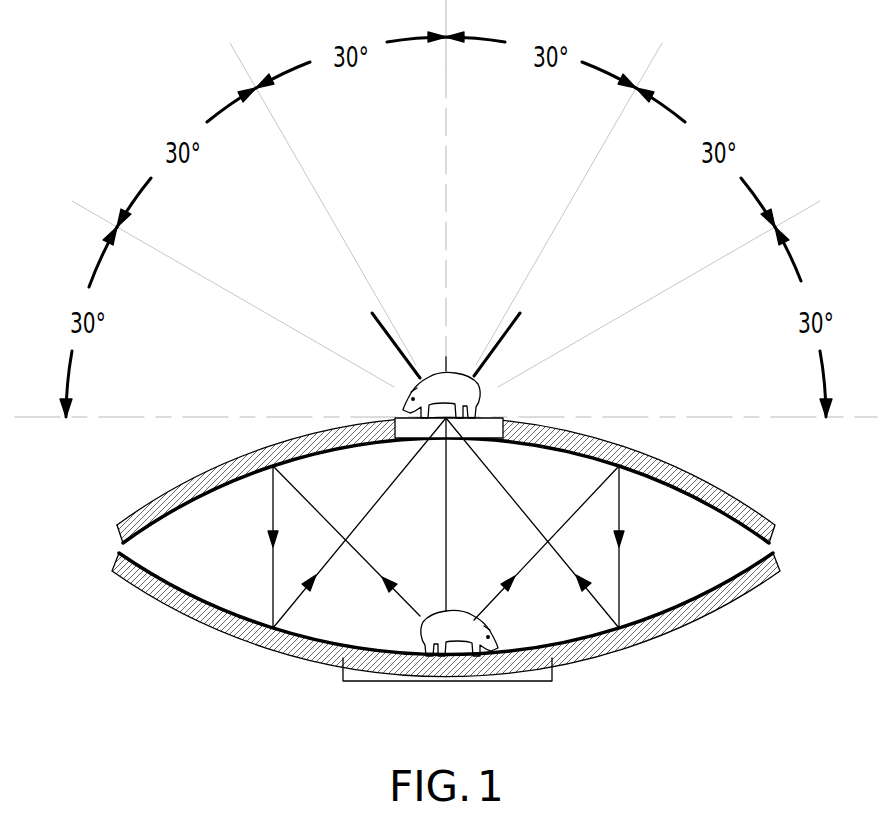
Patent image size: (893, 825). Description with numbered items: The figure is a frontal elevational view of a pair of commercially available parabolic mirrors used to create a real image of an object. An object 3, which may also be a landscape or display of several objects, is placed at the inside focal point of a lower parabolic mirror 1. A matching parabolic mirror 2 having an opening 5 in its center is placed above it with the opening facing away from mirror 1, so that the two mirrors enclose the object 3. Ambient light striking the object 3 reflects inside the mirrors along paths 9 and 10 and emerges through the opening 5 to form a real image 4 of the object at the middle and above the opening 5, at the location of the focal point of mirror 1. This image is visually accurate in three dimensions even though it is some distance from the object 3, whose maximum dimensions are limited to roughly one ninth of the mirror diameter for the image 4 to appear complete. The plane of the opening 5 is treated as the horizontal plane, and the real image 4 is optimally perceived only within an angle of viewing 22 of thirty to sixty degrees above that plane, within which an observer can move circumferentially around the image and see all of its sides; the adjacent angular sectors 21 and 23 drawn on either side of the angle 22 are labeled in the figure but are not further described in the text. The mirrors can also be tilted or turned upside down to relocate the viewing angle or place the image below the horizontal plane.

The parabolic mirror 1 is at (598, 656).
The matching parabolic mirror 2 is at (700, 480).
The object 3 is at (420, 618).
The real image 4 is at (480, 393).
The opening 5 is at (498, 422).
The path 9 is at (397, 593).
The path 10 is at (598, 601).
The first 30 degree viewing sector 21 is at (172, 349).
The angle of viewing 22 is at (250, 216).
The third 30 degree viewing sector 23 is at (387, 138).